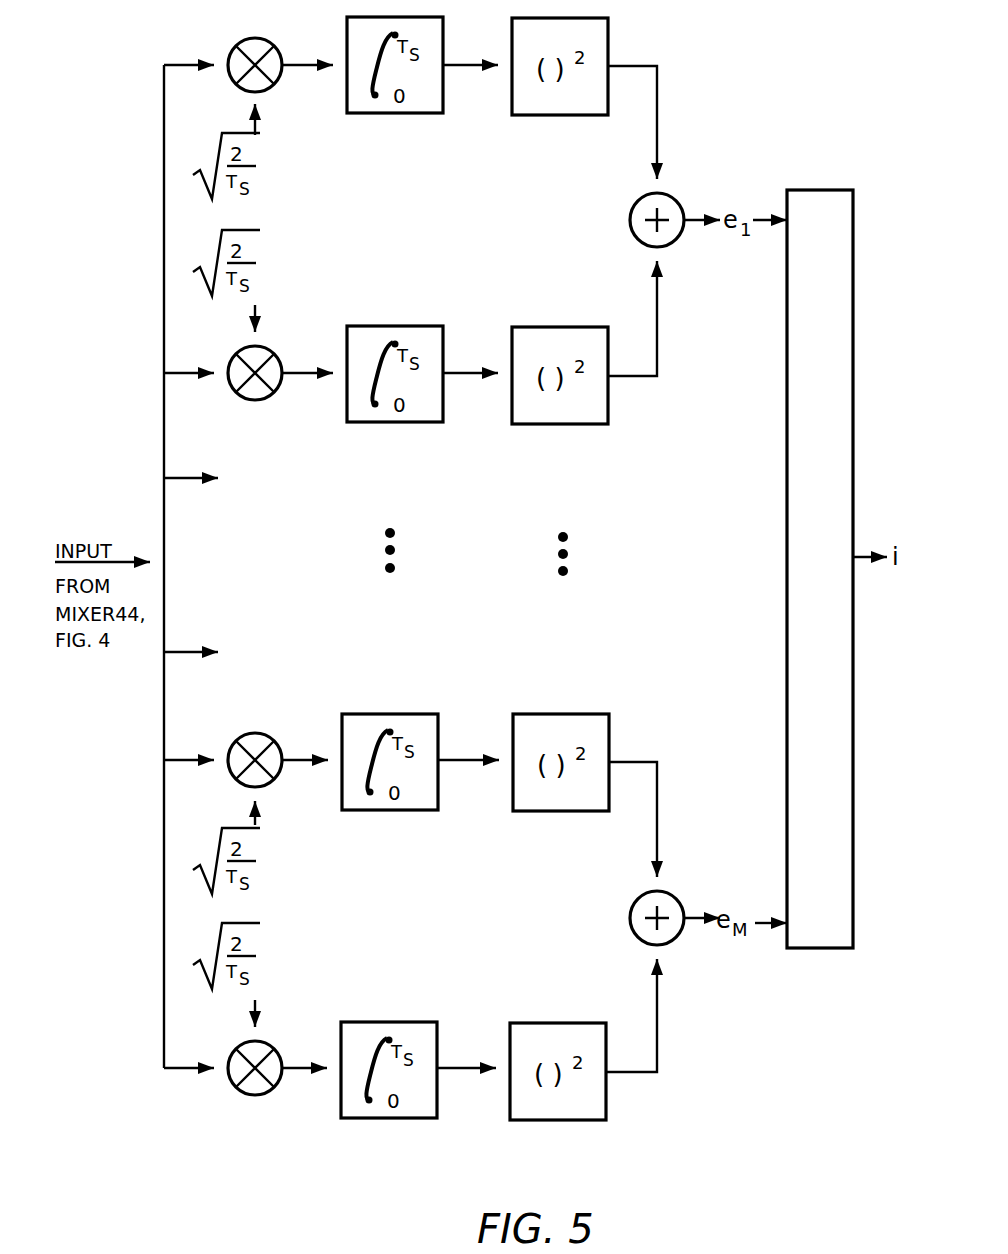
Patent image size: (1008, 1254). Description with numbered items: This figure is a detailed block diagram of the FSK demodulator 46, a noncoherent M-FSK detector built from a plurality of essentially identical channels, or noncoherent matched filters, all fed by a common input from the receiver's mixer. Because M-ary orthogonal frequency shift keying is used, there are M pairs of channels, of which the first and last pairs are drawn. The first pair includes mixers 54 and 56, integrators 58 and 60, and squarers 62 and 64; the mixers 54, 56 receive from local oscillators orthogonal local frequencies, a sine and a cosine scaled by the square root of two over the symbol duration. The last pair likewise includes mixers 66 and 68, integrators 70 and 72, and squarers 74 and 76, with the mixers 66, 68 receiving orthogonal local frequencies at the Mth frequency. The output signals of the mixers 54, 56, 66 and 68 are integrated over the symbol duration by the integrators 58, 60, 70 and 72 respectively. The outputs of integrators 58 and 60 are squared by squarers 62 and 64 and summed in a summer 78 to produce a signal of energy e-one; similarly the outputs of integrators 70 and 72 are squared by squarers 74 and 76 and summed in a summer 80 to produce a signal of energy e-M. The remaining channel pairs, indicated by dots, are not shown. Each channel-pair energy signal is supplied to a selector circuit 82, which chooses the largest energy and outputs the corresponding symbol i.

The FSK demodulator 46 is at (334, 580).
The mixer 54 is at (255, 35).
The mixer 56 is at (262, 397).
The integrator 58 is at (418, 113).
The integrator 60 is at (405, 327).
The squarer 62 is at (553, 115).
The squarer 64 is at (558, 327).
The mixer 66 is at (272, 737).
The mixer 68 is at (248, 1092).
The integrator 70 is at (410, 810).
The integrator 72 is at (415, 1023).
The squarer 74 is at (563, 810).
The squarer 76 is at (545, 1025).
The summer 78 is at (630, 224).
The summer 80 is at (630, 915).
The selector circuit 82 is at (787, 628).